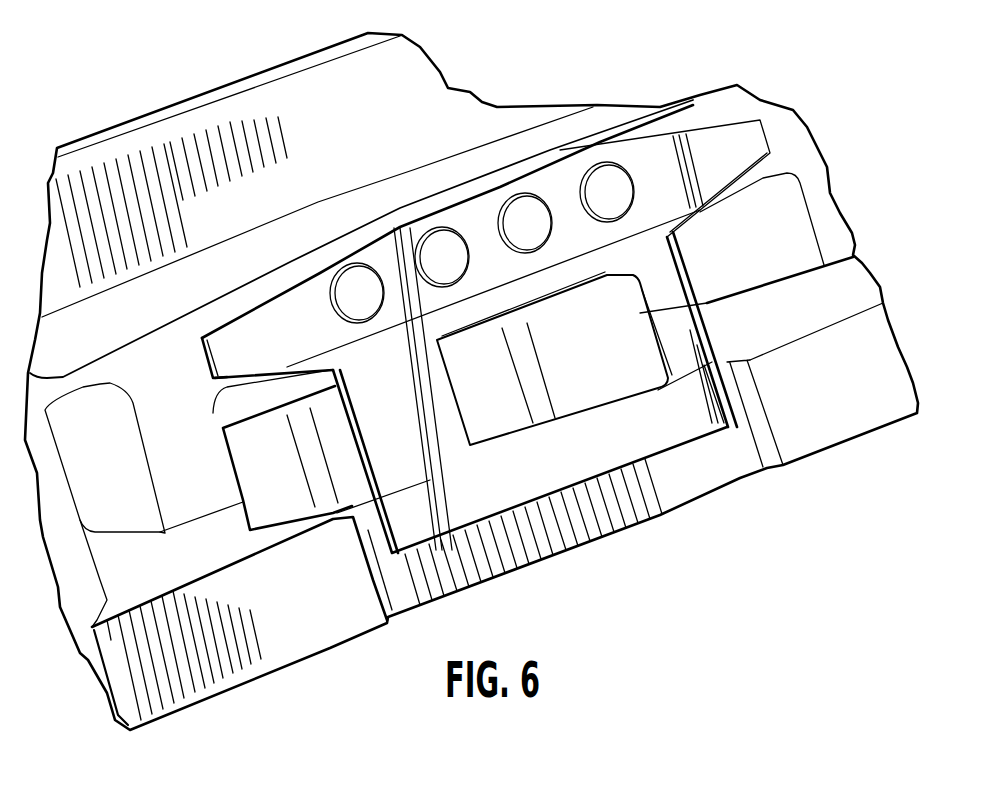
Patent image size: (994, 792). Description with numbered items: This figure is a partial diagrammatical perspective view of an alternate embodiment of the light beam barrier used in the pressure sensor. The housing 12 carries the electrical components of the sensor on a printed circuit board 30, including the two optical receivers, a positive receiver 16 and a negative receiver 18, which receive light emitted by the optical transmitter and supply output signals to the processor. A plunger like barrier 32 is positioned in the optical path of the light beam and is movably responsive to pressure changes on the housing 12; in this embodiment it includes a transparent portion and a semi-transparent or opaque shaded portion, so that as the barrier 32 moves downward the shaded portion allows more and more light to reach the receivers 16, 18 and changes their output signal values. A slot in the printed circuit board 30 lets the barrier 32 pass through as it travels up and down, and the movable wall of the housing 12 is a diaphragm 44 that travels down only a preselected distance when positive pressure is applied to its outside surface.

The housing 12 is at (310, 78).
The diaphragm 44 is at (407, 207).
The plunger like barrier 32 is at (747, 140).
The positive receiver 16 is at (373, 473).
The negative receiver 18 is at (270, 467).
The printed circuit board 30 is at (870, 360).